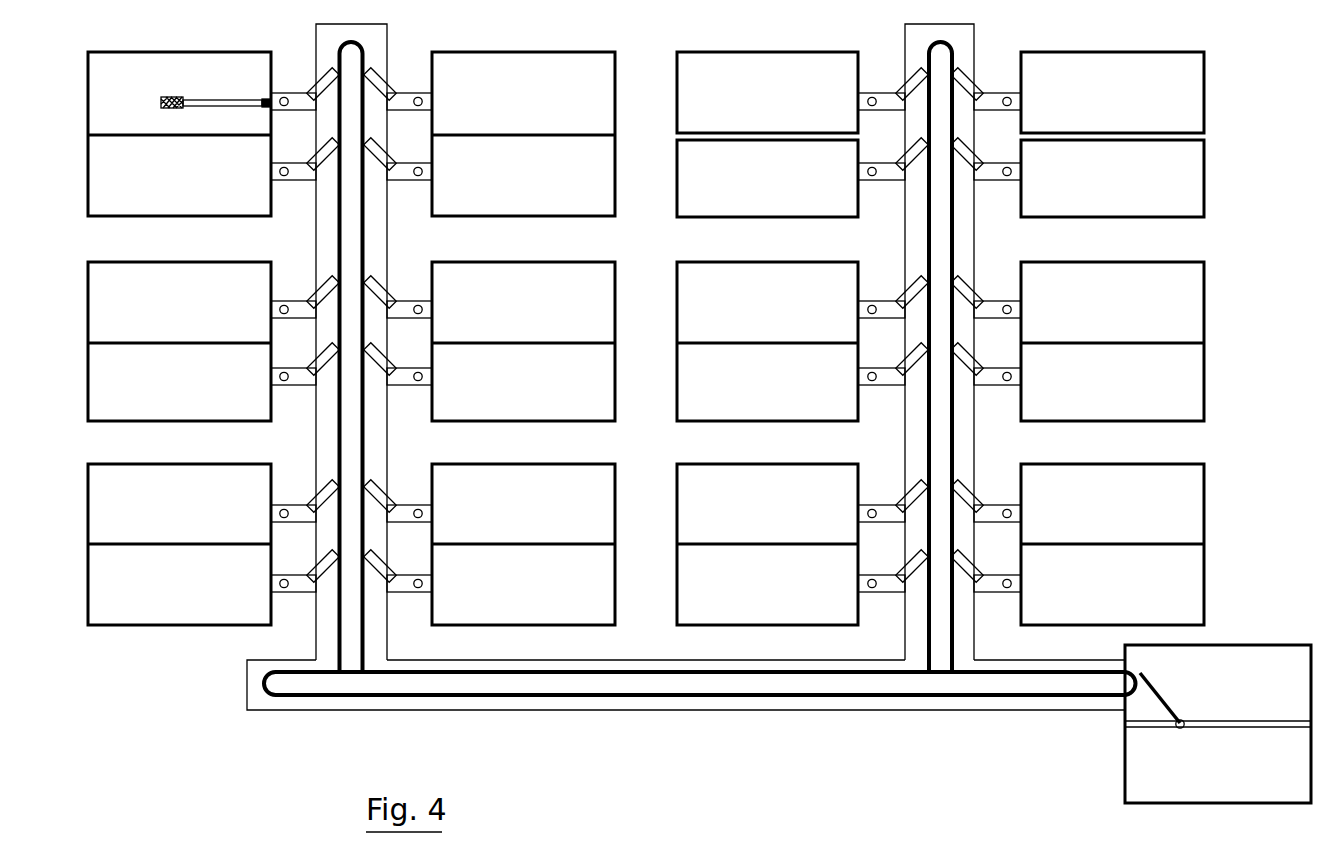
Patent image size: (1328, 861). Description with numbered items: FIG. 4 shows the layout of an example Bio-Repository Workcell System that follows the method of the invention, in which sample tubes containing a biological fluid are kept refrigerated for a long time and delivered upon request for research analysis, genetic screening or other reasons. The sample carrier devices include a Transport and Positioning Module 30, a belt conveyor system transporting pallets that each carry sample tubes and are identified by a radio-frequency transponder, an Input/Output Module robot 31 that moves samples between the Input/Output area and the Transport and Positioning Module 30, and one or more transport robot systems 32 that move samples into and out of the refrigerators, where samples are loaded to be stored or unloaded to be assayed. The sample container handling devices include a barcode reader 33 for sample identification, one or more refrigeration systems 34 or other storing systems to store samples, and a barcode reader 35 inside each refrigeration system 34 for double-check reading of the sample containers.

The Transport and Positioning Module 30 is at (903, 639).
The Input/Output Module robot 31 is at (1228, 790).
The transport robot system 32 is at (391, 296).
The barcode reader 33 is at (1180, 697).
The refrigeration system 34 is at (125, 118).
The barcode reader inside refrigeration system 35 is at (266, 97).